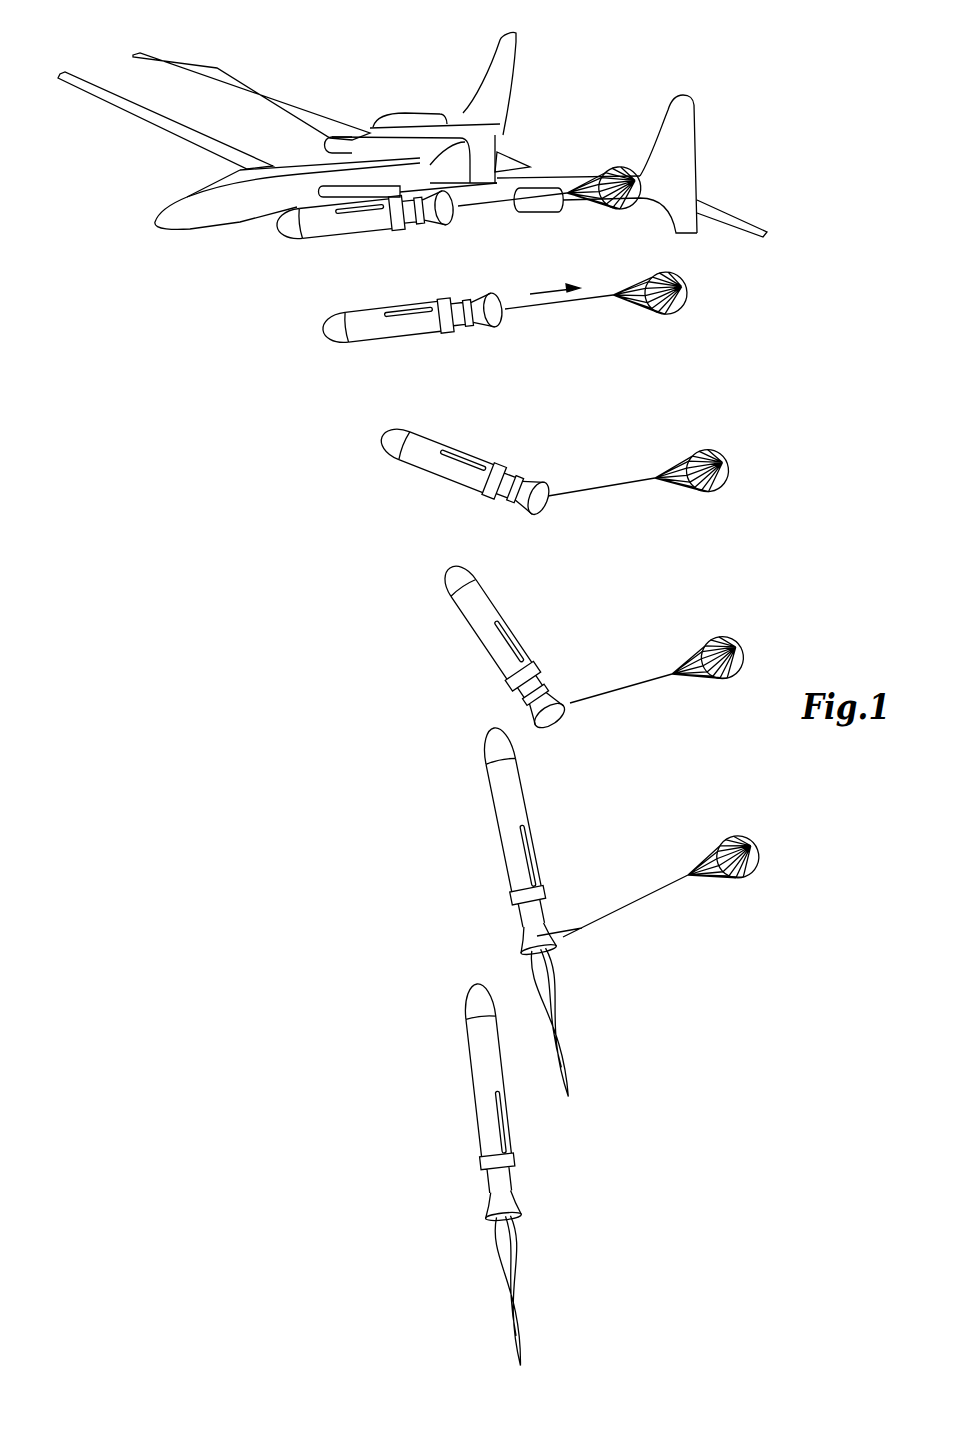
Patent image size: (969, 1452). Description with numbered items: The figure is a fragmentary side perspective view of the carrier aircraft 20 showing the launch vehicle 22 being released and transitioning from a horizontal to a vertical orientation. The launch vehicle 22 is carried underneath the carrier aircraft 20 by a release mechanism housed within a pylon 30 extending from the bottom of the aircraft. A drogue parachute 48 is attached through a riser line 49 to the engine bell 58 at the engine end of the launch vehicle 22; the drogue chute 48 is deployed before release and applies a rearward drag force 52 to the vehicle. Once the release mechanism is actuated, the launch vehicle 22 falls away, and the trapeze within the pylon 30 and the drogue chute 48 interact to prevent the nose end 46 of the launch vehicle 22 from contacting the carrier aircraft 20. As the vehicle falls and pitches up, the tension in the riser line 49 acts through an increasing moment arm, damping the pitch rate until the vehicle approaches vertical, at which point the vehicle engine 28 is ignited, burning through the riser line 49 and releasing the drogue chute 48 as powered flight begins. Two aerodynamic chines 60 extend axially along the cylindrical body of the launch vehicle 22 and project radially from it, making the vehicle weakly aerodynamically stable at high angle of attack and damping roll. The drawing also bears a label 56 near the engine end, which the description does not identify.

The carrier aircraft 20 is at (293, 153).
The pylon 30 is at (357, 188).
The nose end 46 is at (278, 232).
The launch vehicle 22 is at (307, 244).
The aerodynamic chines 60 is at (374, 214).
The vehicle engine 28 is at (414, 228).
The nozzle exit 56 is at (508, 310).
The engine bell 58 is at (538, 515).
The riser line 49 is at (500, 206).
The rearward drag force 52 is at (548, 290).
The drogue parachute 48 is at (614, 208).